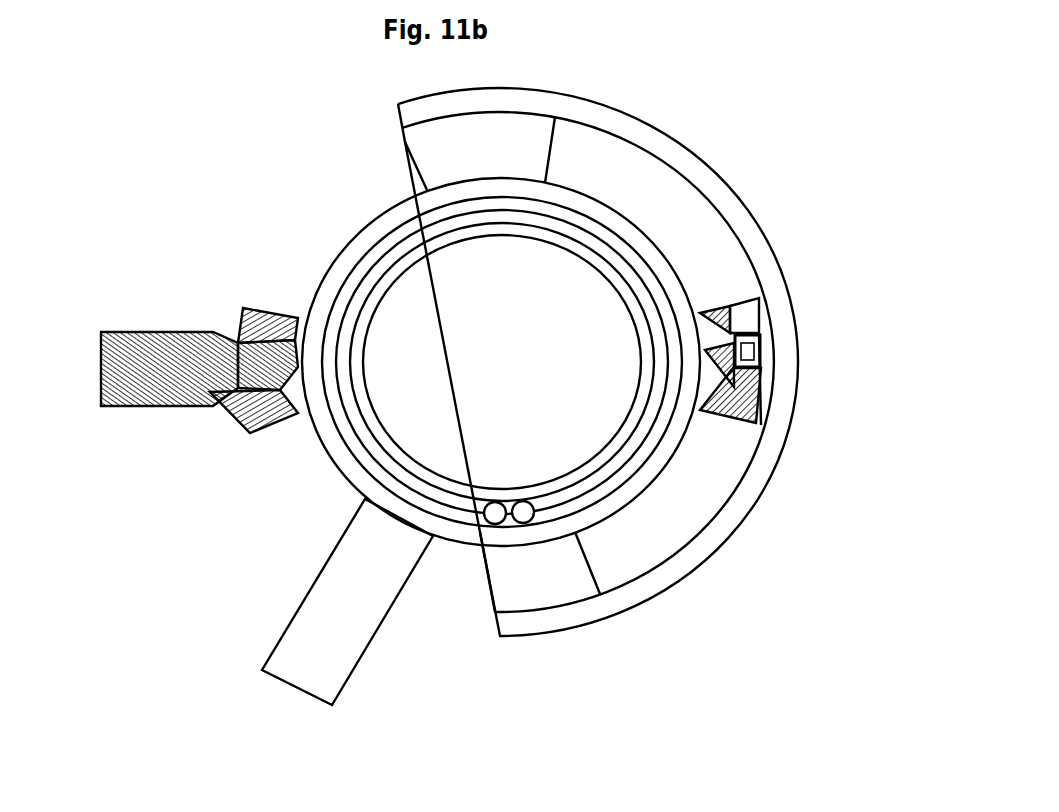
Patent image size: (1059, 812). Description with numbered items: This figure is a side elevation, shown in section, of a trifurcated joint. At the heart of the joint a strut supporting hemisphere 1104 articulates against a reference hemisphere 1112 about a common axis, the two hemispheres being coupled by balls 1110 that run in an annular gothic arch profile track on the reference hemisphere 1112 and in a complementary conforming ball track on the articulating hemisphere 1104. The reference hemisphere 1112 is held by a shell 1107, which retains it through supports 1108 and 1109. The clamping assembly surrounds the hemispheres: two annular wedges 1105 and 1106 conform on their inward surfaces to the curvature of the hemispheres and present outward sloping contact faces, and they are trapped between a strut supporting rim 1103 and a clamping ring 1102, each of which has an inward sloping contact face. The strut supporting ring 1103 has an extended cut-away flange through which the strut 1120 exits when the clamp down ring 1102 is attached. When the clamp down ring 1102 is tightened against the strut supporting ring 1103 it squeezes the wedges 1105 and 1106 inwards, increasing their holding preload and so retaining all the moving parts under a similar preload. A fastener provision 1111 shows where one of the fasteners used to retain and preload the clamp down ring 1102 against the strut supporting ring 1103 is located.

The clamping ring 1102 is at (245, 306).
The strut supporting rim 1103 is at (240, 417).
The strut supporting hemisphere 1104 is at (335, 618).
The annular wedge 1105 is at (752, 363).
The annular wedge 1106 is at (750, 400).
The shell 1107 is at (677, 562).
The support 1108 is at (547, 580).
The support 1109 is at (465, 142).
The balls 1110 is at (490, 509).
The fastener provision 1111 is at (748, 313).
The reference hemisphere 1112 is at (630, 488).
The strut 1120 is at (164, 334).